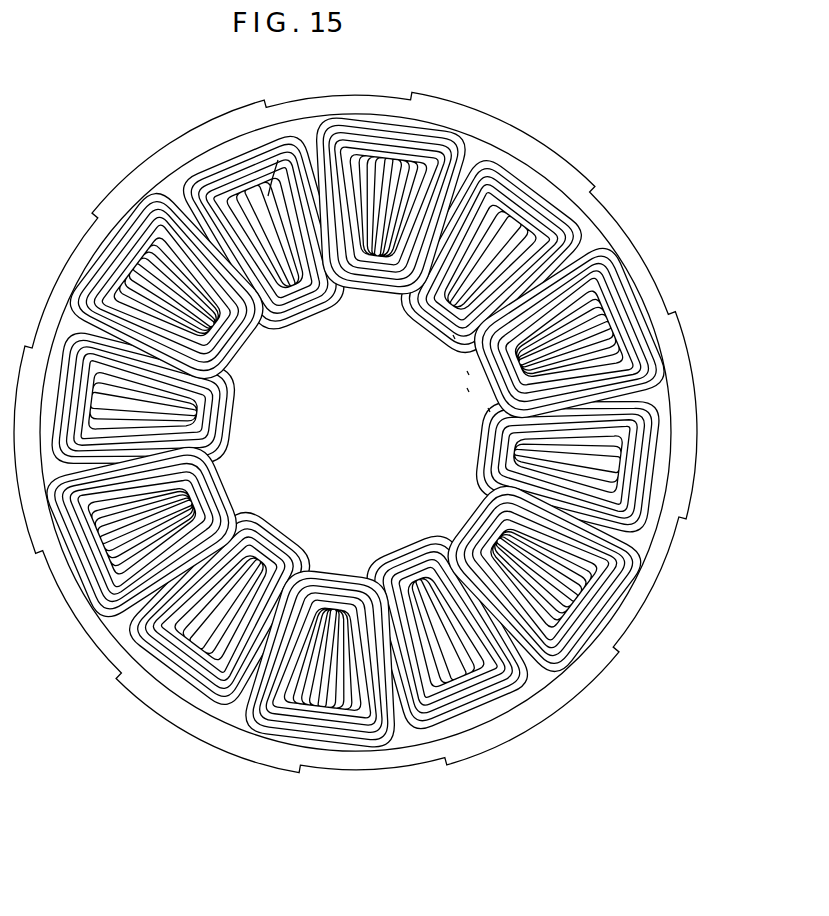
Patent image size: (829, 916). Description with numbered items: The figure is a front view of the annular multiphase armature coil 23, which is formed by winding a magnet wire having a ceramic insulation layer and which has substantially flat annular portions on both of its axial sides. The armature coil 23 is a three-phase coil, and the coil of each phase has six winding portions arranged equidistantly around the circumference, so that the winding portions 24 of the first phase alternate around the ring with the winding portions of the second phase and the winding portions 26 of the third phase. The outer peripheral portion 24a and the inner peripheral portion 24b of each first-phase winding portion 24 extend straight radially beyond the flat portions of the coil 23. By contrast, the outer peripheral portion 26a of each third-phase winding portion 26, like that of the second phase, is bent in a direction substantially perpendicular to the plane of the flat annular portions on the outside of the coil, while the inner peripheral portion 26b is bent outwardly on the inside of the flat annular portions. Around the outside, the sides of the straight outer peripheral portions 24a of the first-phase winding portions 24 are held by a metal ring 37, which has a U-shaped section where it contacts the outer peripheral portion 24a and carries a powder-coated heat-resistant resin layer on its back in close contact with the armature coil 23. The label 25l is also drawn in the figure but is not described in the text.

The armature coil 23 is at (278, 160).
The metal ring 37 is at (470, 118).
The winding portion 24 is at (382, 322).
The outer peripheral portion 24a is at (507, 166).
The inner peripheral portion 24b is at (453, 337).
The coil connection 25l is at (467, 373).
The winding portion 26 is at (467, 390).
The outer peripheral portion 26a is at (603, 300).
The inner peripheral portion 26b is at (488, 410).